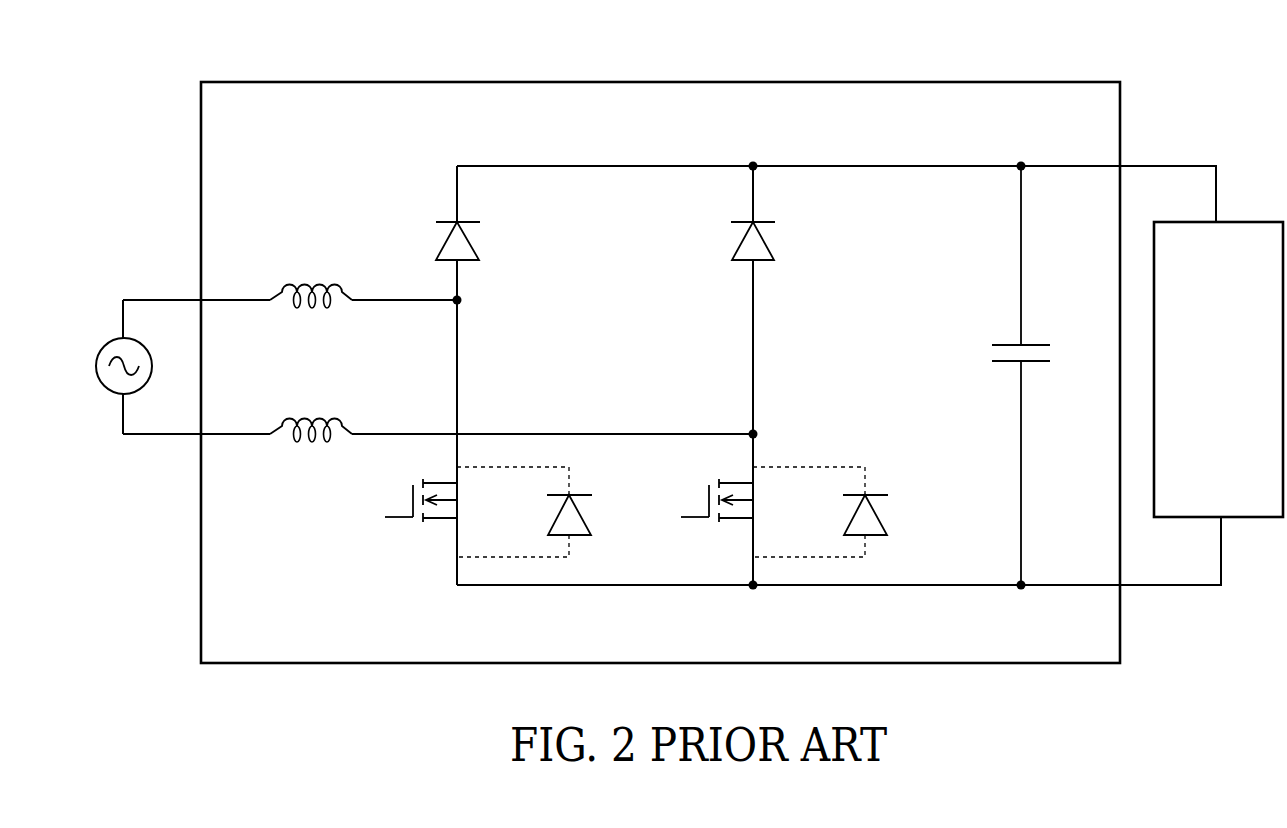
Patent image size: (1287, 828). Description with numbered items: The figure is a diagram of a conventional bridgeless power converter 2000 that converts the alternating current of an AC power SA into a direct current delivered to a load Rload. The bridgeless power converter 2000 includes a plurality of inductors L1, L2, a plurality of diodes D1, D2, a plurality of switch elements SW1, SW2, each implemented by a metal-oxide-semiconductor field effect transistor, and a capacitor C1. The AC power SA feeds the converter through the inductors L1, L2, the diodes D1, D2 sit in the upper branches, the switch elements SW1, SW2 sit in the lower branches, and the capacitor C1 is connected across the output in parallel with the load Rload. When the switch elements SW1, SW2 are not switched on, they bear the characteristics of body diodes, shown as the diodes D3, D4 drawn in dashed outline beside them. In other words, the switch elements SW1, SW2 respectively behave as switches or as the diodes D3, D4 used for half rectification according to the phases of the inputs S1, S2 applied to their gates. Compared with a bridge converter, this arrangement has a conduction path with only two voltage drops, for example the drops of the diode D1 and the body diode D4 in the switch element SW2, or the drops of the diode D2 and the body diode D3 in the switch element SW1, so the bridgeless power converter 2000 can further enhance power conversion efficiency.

The bridgeless power converter 2000 is at (1058, 82).
The AC power SA is at (103, 348).
The inductor L1 is at (345, 296).
The inductor L2 is at (345, 430).
The diode D1 is at (472, 238).
The diode D2 is at (768, 238).
The body diode D3 is at (583, 518).
The body diode D4 is at (879, 518).
The switch element SW1 is at (491, 512).
The switch element SW2 is at (787, 512).
The input S1 is at (383, 520).
The input S2 is at (678, 520).
The capacitor C1 is at (1047, 351).
The load Rload is at (1218, 369).